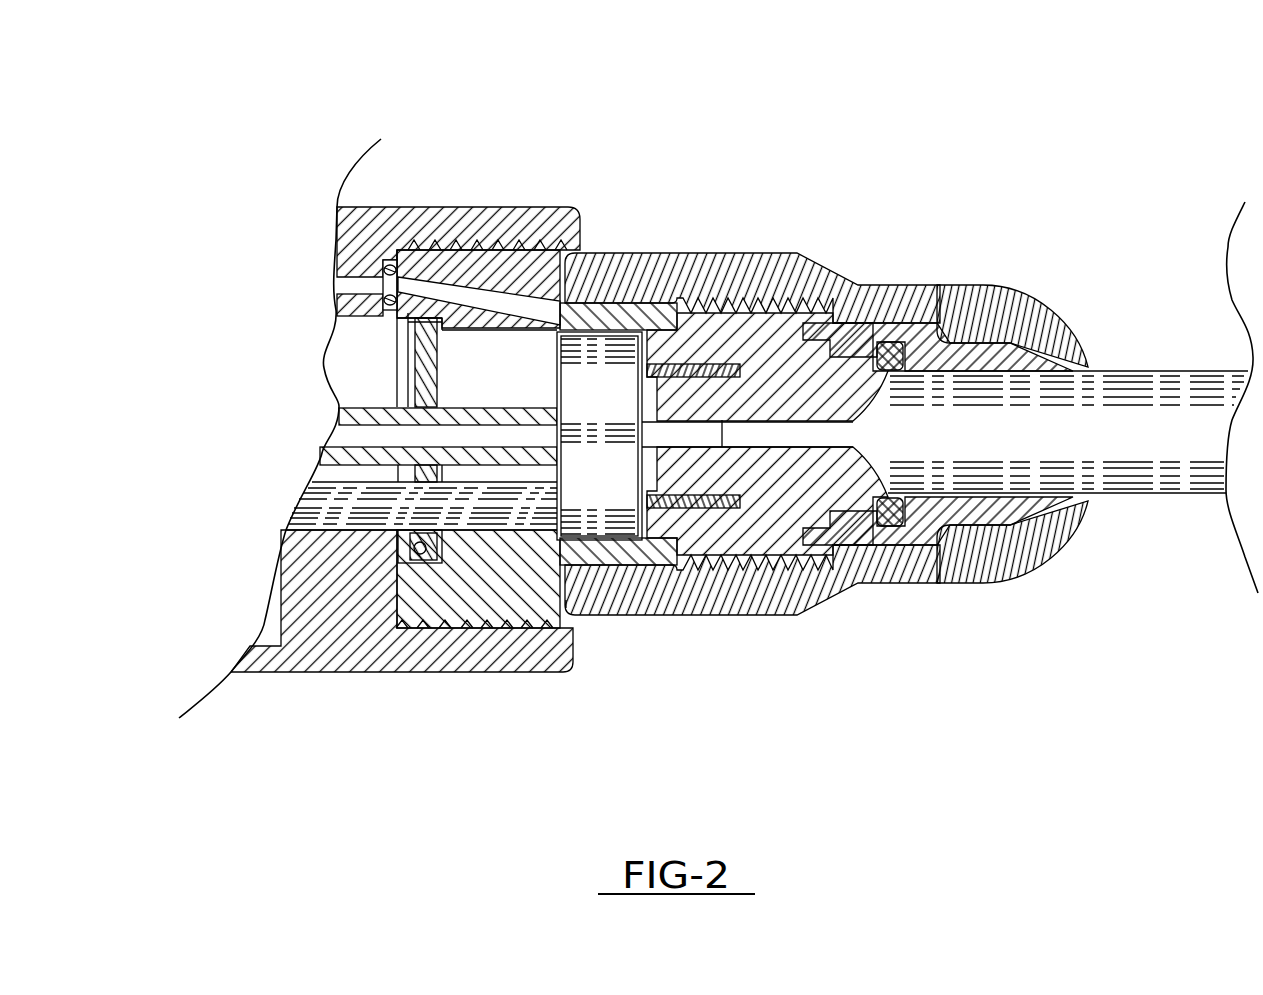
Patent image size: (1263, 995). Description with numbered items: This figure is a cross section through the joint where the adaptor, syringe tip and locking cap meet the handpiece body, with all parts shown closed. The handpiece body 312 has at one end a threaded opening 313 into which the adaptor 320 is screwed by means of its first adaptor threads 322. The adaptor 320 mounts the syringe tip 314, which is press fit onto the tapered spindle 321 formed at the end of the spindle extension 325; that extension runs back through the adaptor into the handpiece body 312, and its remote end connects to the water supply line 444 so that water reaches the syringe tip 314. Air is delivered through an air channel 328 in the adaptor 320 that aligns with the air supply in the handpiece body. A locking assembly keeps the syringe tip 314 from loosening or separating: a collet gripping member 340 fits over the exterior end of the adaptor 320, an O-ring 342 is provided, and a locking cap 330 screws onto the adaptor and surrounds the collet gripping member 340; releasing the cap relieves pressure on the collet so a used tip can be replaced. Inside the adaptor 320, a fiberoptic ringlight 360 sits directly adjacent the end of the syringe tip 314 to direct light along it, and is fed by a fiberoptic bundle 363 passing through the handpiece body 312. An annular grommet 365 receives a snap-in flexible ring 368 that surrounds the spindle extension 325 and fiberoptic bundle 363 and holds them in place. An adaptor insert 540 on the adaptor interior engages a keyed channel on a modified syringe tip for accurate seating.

The handpiece body 312 is at (411, 650).
The threaded opening 313 is at (568, 619).
The syringe tip 314 is at (1195, 448).
The adaptor 320 is at (748, 340).
The tapered spindle 321 is at (798, 617).
The first adaptor threads 322 is at (453, 240).
The spindle extension 325 is at (358, 415).
The air channel 328 is at (493, 308).
The locking cap 330 is at (1035, 323).
The collet gripping member 340 is at (945, 300).
The O-ring 342 is at (892, 362).
The fiberoptic ringlight 360 is at (628, 500).
The fiberoptic bundle 363 is at (333, 497).
The annular grommet 365 is at (435, 555).
The flexible ring 368 is at (423, 538).
The water supply line 444 is at (360, 284).
The adaptor insert 540 is at (687, 360).